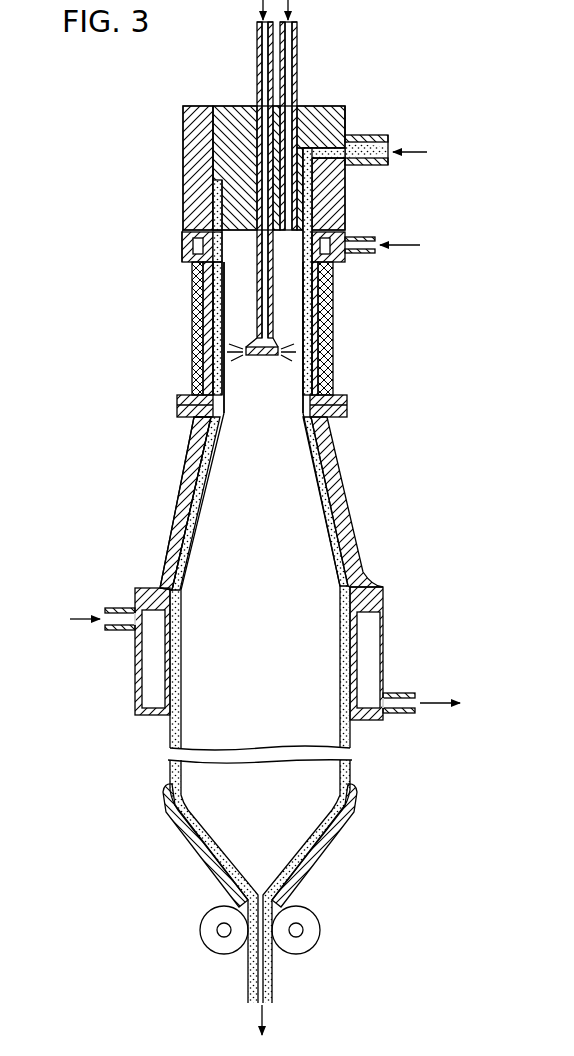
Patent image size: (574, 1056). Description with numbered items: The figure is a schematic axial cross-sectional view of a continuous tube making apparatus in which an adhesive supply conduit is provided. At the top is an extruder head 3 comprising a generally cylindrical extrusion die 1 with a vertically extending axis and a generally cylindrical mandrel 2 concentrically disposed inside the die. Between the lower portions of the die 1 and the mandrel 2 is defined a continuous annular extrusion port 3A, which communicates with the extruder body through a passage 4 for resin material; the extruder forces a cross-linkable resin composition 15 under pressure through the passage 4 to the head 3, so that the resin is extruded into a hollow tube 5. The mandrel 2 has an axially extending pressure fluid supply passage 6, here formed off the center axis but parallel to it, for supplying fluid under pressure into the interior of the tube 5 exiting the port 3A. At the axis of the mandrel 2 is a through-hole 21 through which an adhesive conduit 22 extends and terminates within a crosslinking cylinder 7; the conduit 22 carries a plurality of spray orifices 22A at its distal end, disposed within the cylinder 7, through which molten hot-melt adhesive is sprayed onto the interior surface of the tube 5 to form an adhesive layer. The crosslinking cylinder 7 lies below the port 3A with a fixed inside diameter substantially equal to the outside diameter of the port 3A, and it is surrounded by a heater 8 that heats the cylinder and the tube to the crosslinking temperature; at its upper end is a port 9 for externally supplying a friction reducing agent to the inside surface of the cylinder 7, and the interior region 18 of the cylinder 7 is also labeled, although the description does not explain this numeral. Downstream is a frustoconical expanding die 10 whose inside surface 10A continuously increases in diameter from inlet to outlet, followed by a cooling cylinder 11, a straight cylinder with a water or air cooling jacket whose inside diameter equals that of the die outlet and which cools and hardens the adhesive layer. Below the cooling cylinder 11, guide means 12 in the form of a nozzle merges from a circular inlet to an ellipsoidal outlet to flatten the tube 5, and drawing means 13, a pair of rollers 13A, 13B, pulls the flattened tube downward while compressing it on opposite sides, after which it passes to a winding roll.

The extrusion die 1 is at (196, 174).
The mandrel 2 is at (232, 198).
The extruder head 3 is at (231, 168).
The extrusion port 3A is at (208, 228).
The passage for resin material 4 is at (323, 152).
The hollow tube 5 is at (308, 277).
The pressure fluid supply passage 6 is at (287, 188).
The crosslinking cylinder 7 is at (330, 303).
The heater 8 is at (330, 353).
The port for friction reducing agent 9 is at (317, 233).
The expanding die 10 is at (350, 507).
The inside surface of expanding die 10A is at (338, 537).
The cooling cylinder 11 is at (383, 630).
The guide means 12 is at (203, 853).
The drawing means 13 is at (274, 940).
The roller 13A is at (216, 945).
The roller 13B is at (315, 930).
The cross-linkable resin composition 15 is at (366, 137).
The combustion chamber 18 is at (297, 382).
The through-hole 21 is at (262, 128).
The adhesive conduit 22 is at (243, 262).
The spray orifices 22A is at (233, 348).